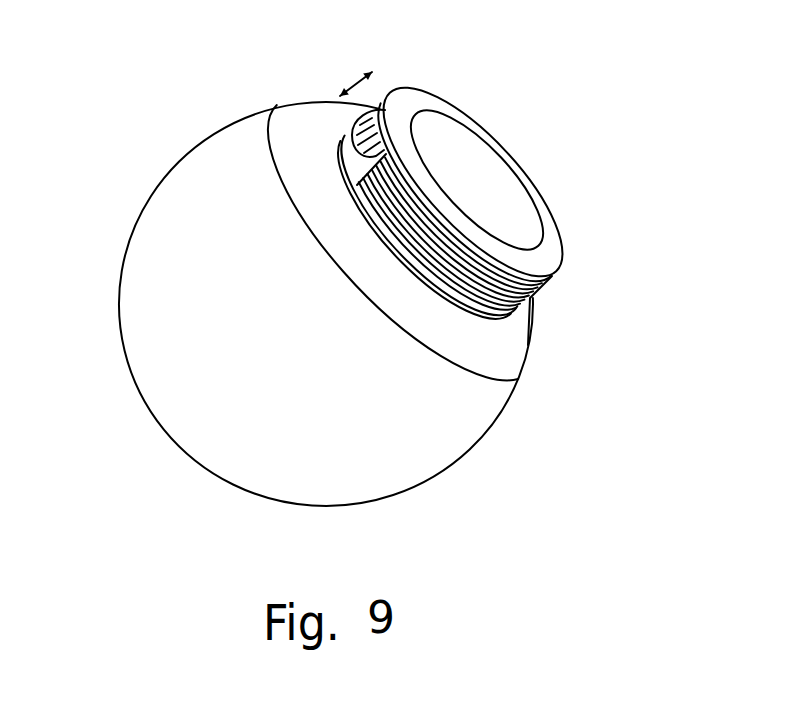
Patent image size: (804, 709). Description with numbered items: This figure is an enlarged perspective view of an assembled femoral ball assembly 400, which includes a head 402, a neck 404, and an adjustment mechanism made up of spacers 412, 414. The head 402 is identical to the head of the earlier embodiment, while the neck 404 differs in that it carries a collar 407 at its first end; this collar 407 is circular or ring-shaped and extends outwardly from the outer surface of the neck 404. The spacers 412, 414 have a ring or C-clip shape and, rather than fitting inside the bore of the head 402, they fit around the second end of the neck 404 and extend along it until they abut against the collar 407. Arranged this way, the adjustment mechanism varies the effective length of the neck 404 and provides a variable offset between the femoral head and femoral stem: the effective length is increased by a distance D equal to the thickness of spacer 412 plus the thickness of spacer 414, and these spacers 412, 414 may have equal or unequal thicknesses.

The femoral ball assembly 400 is at (372, 278).
The head 402 is at (460, 430).
The neck 404 is at (517, 237).
The collar 407 is at (553, 253).
The spacer 412 is at (505, 303).
The spacer 414 is at (531, 300).